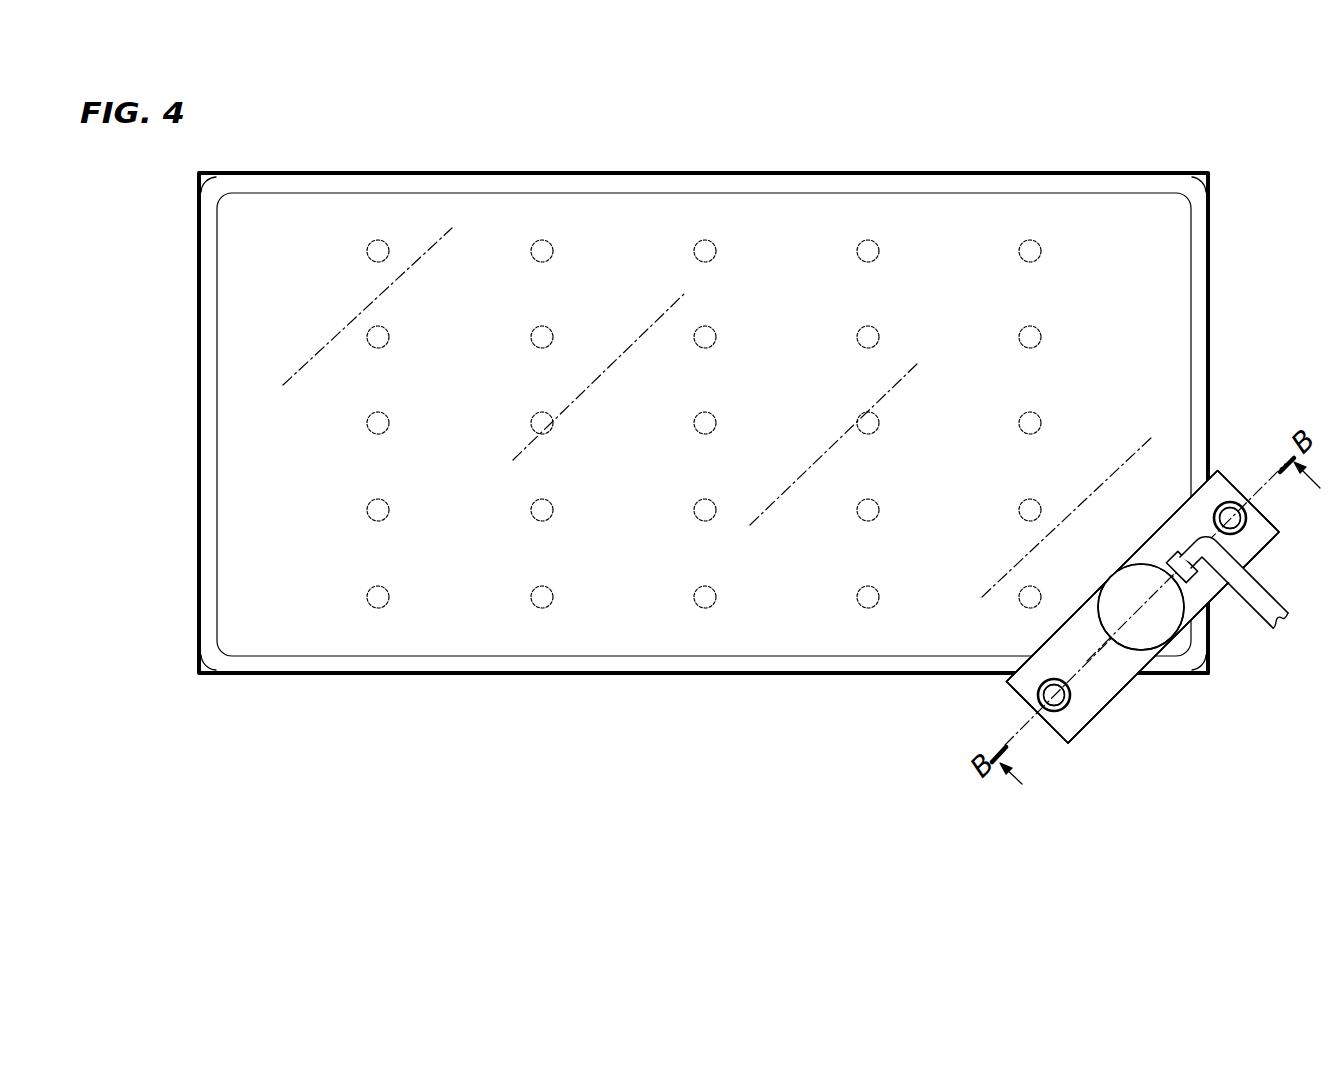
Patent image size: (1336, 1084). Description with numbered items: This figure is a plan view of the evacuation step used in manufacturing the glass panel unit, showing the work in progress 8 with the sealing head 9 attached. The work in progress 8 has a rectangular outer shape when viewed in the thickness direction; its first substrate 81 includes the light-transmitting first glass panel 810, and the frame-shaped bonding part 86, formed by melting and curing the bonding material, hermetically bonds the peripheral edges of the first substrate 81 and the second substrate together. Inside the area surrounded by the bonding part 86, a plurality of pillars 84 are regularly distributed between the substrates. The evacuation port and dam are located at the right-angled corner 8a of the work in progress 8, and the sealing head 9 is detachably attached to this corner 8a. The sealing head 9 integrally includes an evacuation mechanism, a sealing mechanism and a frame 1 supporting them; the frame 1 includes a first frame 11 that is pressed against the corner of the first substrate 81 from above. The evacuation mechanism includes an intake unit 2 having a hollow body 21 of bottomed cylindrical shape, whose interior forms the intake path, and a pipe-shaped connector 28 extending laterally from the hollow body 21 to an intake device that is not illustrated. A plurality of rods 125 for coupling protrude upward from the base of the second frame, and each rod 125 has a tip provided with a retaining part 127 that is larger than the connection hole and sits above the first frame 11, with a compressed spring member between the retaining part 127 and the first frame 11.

The work in progress 8 is at (921, 172).
The first substrate 81 is at (316, 222).
The first glass panel 810 is at (485, 243).
The pillars 84 is at (543, 252).
The bonding part 86 is at (1202, 337).
The corner 8a is at (1207, 652).
The sealing head 9 is at (1224, 470).
The retaining part 127 is at (1233, 501).
The rods 125 is at (1242, 518).
The frame 1 is at (1117, 695).
The first frame 11 is at (1098, 708).
The intake unit 2 is at (1145, 652).
The hollow body 21 is at (1131, 635).
The connector 28 is at (1190, 578).